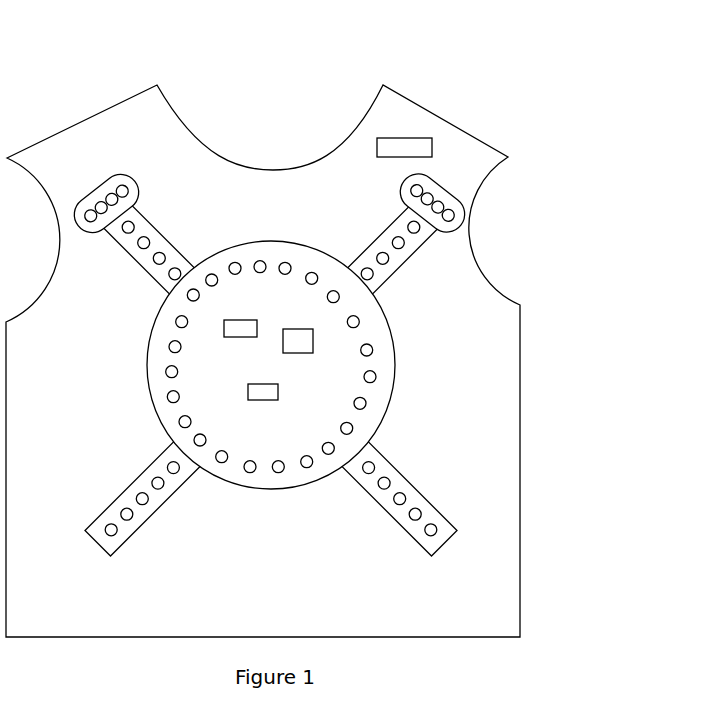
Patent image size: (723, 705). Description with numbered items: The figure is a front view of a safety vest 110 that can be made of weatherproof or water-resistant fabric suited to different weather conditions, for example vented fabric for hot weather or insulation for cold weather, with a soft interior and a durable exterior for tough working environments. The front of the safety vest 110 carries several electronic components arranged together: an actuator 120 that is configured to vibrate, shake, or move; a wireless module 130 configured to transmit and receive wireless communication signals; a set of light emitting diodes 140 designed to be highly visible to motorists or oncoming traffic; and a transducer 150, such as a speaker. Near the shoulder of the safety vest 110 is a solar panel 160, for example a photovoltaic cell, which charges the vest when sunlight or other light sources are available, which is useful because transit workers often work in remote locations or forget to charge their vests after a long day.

The safety vest 110 is at (133, 82).
The actuator 120 is at (335, 350).
The wireless module 130 is at (259, 297).
The set of light emitting diodes (LEDs) 140 is at (153, 358).
The transducer 150 is at (262, 422).
The solar panel 160 is at (454, 148).